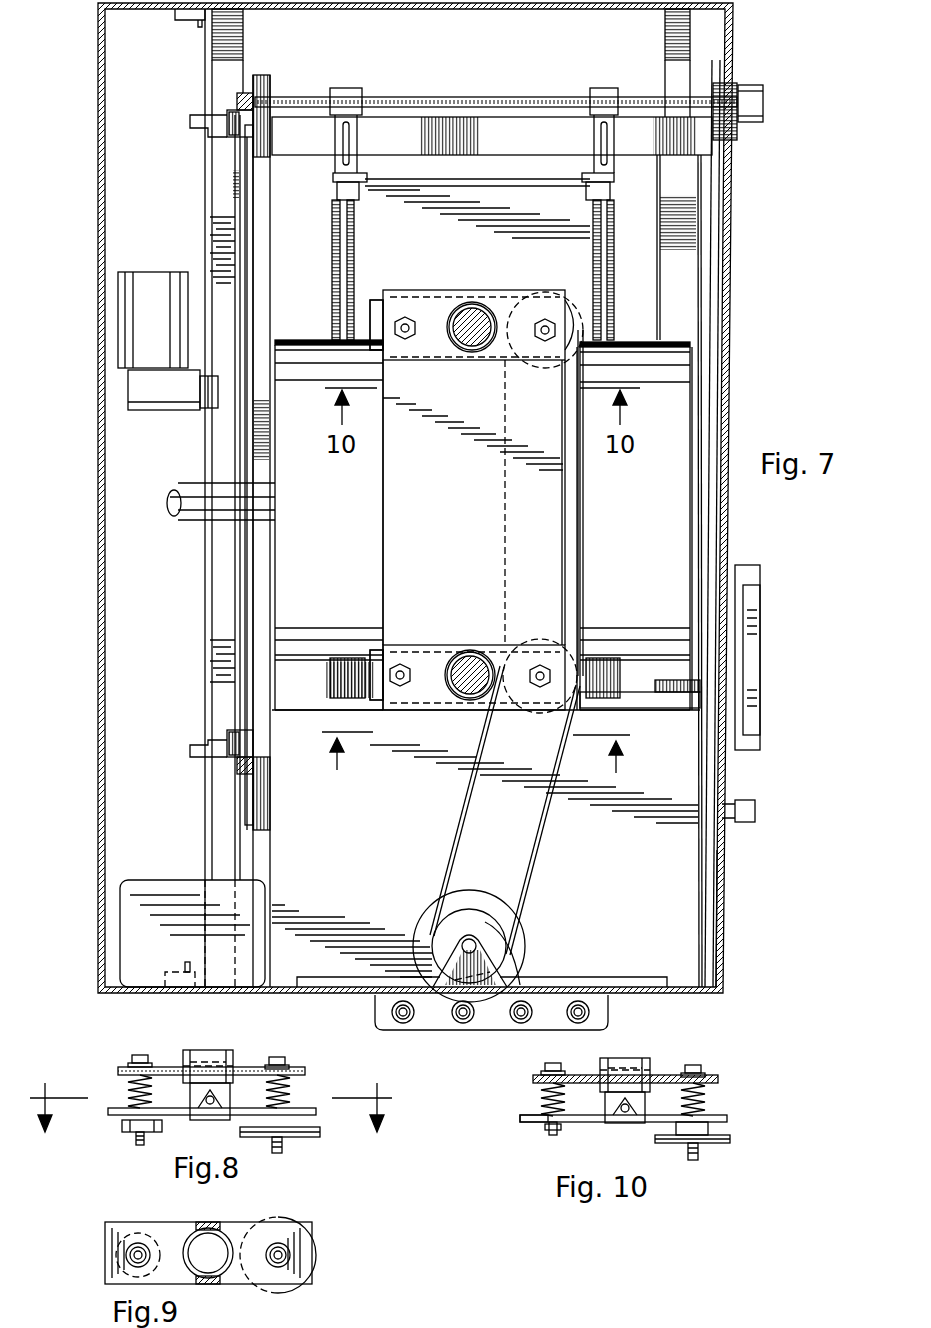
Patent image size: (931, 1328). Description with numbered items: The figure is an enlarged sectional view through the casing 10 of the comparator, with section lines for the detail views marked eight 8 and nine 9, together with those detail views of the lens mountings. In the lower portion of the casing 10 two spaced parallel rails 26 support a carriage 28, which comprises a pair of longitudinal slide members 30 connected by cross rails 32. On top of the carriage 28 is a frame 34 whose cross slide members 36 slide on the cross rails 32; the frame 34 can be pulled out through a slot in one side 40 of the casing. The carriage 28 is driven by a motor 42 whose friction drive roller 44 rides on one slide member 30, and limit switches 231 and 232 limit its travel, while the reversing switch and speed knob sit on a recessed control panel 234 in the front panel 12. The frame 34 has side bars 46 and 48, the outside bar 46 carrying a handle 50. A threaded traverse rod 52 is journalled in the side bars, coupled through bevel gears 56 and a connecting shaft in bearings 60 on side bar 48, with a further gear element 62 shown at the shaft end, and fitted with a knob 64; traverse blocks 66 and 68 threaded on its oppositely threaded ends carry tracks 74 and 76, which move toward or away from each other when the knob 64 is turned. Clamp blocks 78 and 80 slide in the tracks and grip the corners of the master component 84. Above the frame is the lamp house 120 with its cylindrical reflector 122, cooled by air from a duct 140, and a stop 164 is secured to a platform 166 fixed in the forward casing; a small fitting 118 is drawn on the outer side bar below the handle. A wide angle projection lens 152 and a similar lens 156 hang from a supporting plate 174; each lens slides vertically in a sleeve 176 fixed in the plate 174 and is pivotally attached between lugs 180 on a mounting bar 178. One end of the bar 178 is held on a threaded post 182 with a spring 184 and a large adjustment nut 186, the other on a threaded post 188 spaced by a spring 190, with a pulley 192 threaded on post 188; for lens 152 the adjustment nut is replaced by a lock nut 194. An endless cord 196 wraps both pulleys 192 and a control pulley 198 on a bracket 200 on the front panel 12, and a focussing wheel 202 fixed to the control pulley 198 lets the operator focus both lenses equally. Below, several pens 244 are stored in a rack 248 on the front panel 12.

In FIG. 7, the casing 10 is at (376, 513).
In FIG. 7, the front panel 12 is at (700, 990).
In FIG. 7, the rails 26 is at (665, 22).
In FIG. 7, the carriage 28 is at (162, 582).
In FIG. 7, the slide members 30 is at (698, 292).
In FIG. 7, the cross rails 32 is at (195, 126).
In FIG. 7, the frame 34 is at (165, 218).
In FIG. 7, the cross slide members 36 is at (502, 142).
In FIG. 7, the side of casing 40 is at (722, 896).
In FIG. 7, the motor 42 is at (158, 278).
In FIG. 7, the friction drive roller 44 is at (200, 408).
In FIG. 7, the outside side bar 46 is at (720, 190).
In FIG. 7, the side bar 48 is at (262, 246).
In FIG. 7, the handle 50 is at (760, 694).
In FIG. 7, the traverse rod 52 is at (540, 97).
In FIG. 7, the bevel gears 56 is at (258, 82).
In FIG. 7, the bearings 60 is at (240, 132).
In FIG. 7, the pinion gear 62 is at (236, 100).
In FIG. 7, the knob 64 is at (763, 102).
In FIG. 7, the traverse block 66 is at (608, 88).
In FIG. 7, the traverse block 68 is at (345, 88).
In FIG. 7, the channelled track 74 is at (612, 245).
In FIG. 7, the track 76 is at (340, 242).
In FIG. 7, the clamp block 78 is at (612, 192).
In FIG. 7, the clamp block 80 is at (333, 188).
In FIG. 7, the master component 84 is at (530, 190).
In FIG. 7, the stop block 118 is at (755, 812).
In FIG. 7, the lamp house 120 is at (295, 293).
In FIG. 7, the reflector 122 is at (690, 410).
In FIG. 7, the duct 140 is at (190, 508).
In FIG. 7, the projection lens 152 is at (473, 305).
In FIG. 10, the projection lens 152 is at (650, 1090).
In FIG. 7, the lens 156 is at (468, 652).
In FIG. 8, the lens 156 is at (235, 1078).
In FIG. 9, the lens 156 is at (220, 1248).
In FIG. 7, the stop 164 is at (683, 708).
In FIG. 7, the platform 166 is at (698, 940).
In FIG. 7, the supporting plate 174 is at (383, 492).
In FIG. 8, the supporting plate 174 is at (118, 1068).
In FIG. 10, the supporting plate 174 is at (718, 1080).
In FIG. 7, the sleeve 176 is at (472, 352).
In FIG. 8, the sleeve 176 is at (215, 1050).
In FIG. 10, the sleeve 176 is at (620, 1062).
In FIG. 7, the mounting bar 178 is at (380, 350).
In FIG. 8, the mounting bar 178 is at (110, 1111).
In FIG. 9, the mounting bar 178 is at (105, 1234).
In FIG. 10, the mounting bar 178 is at (727, 1118).
In FIG. 8, the lugs 180 is at (210, 1106).
In FIG. 9, the lugs 180 is at (200, 1228).
In FIG. 10, the lugs 180 is at (615, 1115).
In FIG. 7, the threaded post 182 is at (407, 316).
In FIG. 8, the threaded post 182 is at (138, 1142).
In FIG. 9, the threaded post 182 is at (126, 1256).
In FIG. 10, the threaded post 182 is at (549, 1132).
In FIG. 8, the spring 184 is at (130, 1088).
In FIG. 10, the spring 184 is at (543, 1094).
In FIG. 8, the adjustment nut 186 is at (125, 1128).
In FIG. 9, the adjustment nut 186 is at (136, 1232).
In FIG. 7, the threaded post 188 is at (544, 342).
In FIG. 8, the threaded post 188 is at (282, 1148).
In FIG. 9, the threaded post 188 is at (278, 1255).
In FIG. 10, the threaded post 188 is at (698, 1155).
In FIG. 8, the spring 190 is at (292, 1092).
In FIG. 10, the spring 190 is at (705, 1102).
In FIG. 7, the pulley 192 is at (580, 305).
In FIG. 8, the pulley 192 is at (310, 1128).
In FIG. 9, the pulley 192 is at (300, 1226).
In FIG. 10, the pulley 192 is at (730, 1139).
In FIG. 10, the lock nut 194 is at (522, 1120).
In FIG. 7, the endless belt or cord 196 is at (583, 522).
In FIG. 10, the endless belt or cord 196 is at (676, 1135).
In FIG. 7, the control pulley 198 is at (468, 928).
In FIG. 7, the bracket 200 is at (490, 966).
In FIG. 7, the focussing wheel 202 is at (524, 937).
In FIG. 7, the limit switch 231 is at (190, 968).
In FIG. 7, the limit switch 232 is at (185, 15).
In FIG. 7, the control panel 234 is at (120, 905).
In FIG. 7, the pens 244 is at (460, 1024).
In FIG. 7, the rack 248 is at (378, 1008).
In FIG. 7, the section line 8- 8 is at (476, 767).
In FIG. 8, the section line 9- 9 is at (211, 1123).